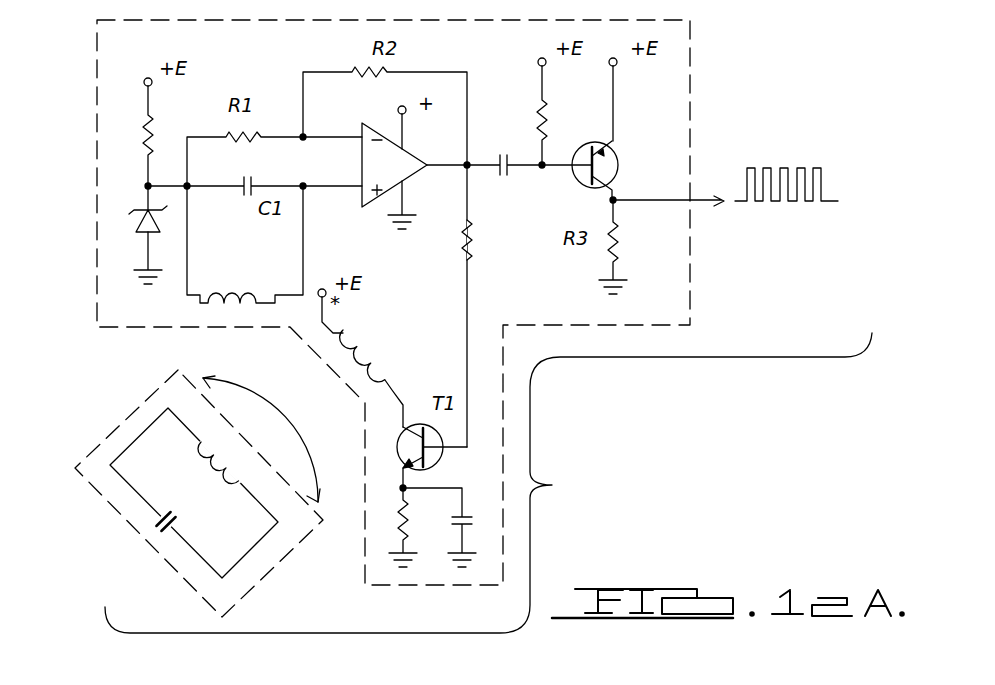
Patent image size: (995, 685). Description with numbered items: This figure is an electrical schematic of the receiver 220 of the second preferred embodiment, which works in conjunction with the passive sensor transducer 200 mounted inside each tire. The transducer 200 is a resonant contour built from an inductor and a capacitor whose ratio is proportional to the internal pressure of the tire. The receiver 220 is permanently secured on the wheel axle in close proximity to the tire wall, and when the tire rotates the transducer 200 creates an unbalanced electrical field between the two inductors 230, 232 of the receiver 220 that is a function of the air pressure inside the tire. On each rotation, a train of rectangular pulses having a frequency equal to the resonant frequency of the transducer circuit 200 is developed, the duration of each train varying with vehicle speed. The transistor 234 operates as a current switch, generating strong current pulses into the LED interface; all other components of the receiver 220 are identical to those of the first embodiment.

The sensor transducer 200 is at (118, 513).
The receiver 220 is at (790, 116).
The inductor 230 is at (206, 300).
The inductor 232 is at (343, 330).
The transistor 234 is at (573, 181).